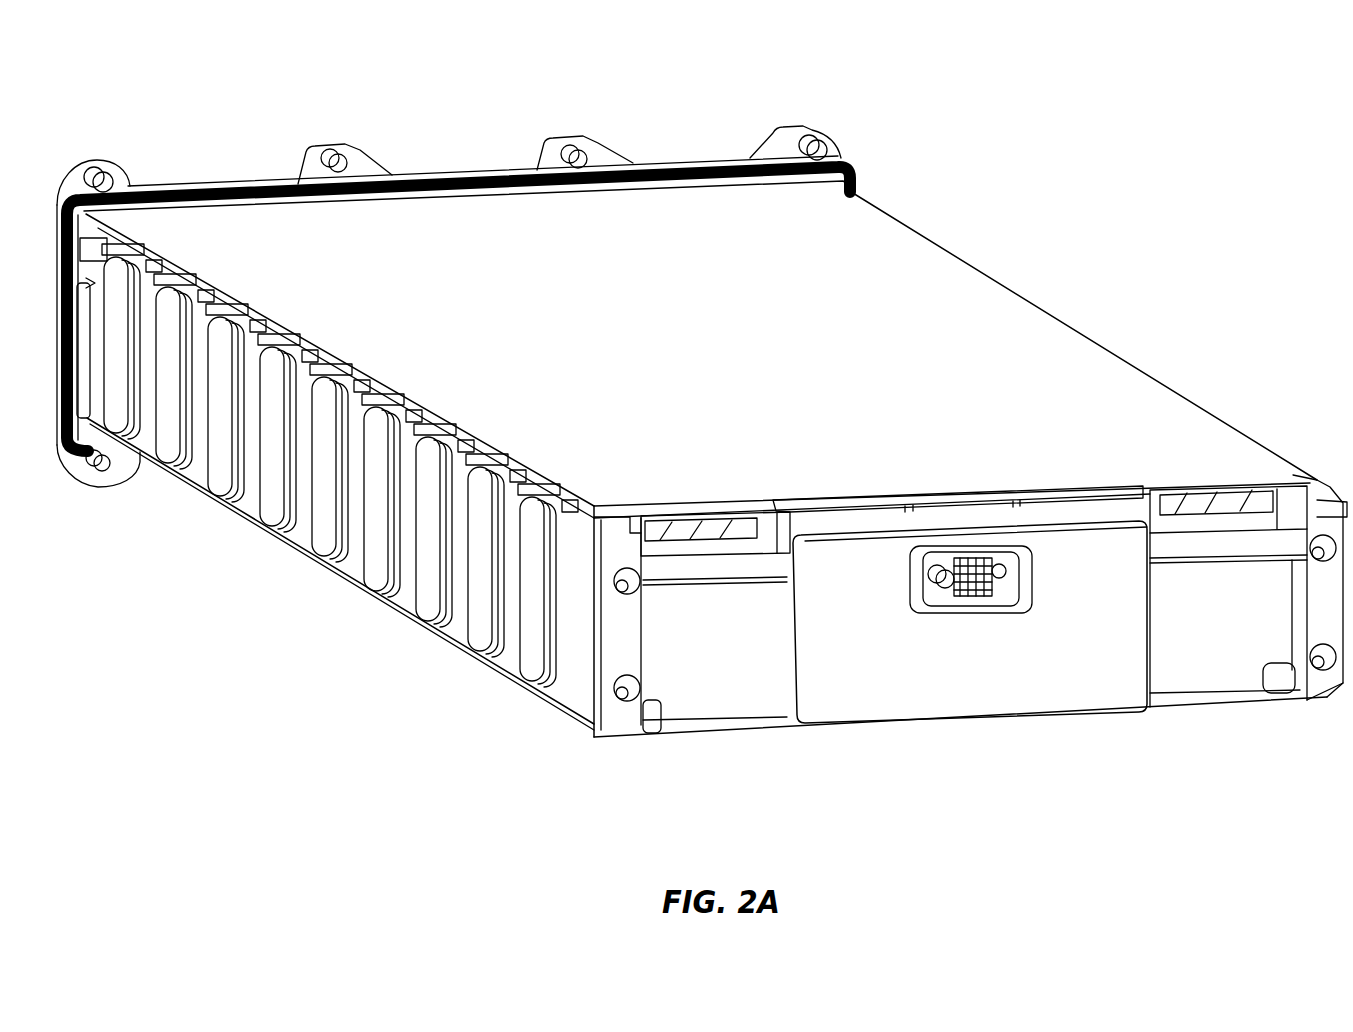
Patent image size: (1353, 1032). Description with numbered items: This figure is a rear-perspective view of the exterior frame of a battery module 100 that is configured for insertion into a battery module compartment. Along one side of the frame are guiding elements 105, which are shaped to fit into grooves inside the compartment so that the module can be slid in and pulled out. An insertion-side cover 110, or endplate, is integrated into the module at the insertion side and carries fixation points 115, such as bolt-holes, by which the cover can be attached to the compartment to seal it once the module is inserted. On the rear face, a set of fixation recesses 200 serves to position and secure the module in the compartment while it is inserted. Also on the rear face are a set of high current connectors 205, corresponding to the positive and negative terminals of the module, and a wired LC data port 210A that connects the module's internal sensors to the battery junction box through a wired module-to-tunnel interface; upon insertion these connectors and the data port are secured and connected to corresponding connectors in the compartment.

The battery module 100 is at (712, 384).
The insertion-side cover 110 is at (540, 150).
The fixation points 115 is at (585, 147).
The guiding elements 105 is at (423, 493).
The high current (HC) connectors 205 is at (1235, 494).
The fixation recesses 200 is at (1316, 551).
The wired LC data port 210A is at (950, 583).